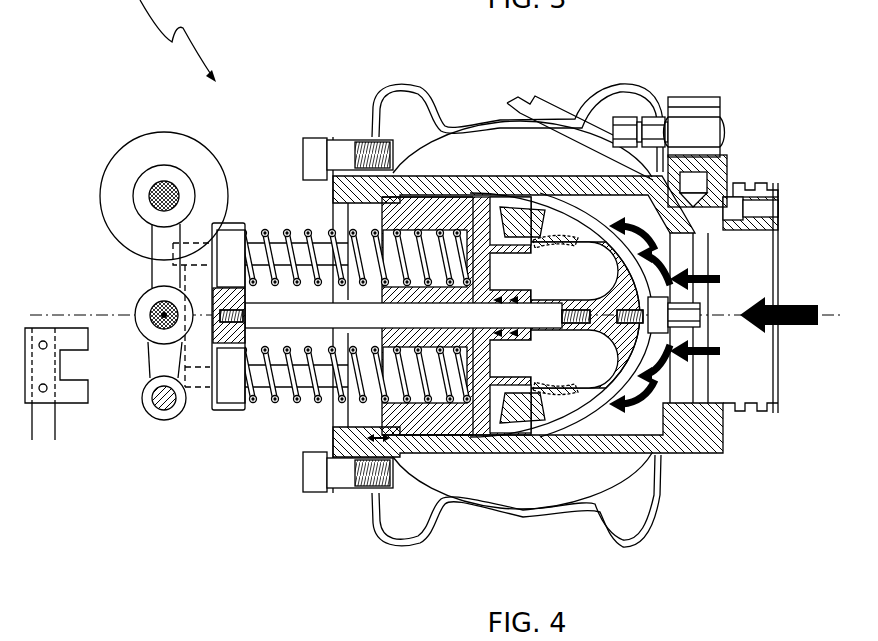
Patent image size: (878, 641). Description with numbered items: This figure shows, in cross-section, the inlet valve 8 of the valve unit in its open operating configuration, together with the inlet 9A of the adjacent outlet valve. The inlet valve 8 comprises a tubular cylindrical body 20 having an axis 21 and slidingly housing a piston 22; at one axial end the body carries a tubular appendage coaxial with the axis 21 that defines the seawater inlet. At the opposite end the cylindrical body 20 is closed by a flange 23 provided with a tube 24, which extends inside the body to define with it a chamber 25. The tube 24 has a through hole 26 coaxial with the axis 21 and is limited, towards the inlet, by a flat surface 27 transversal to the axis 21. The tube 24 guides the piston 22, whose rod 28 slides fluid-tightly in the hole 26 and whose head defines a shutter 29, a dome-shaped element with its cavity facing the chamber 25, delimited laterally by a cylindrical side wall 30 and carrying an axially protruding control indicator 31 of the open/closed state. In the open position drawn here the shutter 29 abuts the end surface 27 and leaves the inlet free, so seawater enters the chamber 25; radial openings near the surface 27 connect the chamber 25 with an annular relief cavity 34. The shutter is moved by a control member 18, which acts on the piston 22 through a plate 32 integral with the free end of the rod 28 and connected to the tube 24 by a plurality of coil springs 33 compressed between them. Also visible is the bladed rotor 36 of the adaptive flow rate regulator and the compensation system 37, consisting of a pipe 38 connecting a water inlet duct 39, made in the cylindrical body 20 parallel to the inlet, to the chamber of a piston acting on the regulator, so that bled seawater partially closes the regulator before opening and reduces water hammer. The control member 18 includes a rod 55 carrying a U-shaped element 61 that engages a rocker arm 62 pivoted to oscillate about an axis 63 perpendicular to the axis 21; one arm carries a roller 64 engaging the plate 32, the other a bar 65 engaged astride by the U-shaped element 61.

The inlet valve 8 is at (446, 470).
The inlet 9A is at (734, 238).
The control member 18 is at (60, 298).
The tubular cylindrical body 20 is at (660, 505).
The axis 21 is at (723, 313).
The piston 22 is at (598, 405).
The flange 23 is at (353, 178).
The tube 24 is at (453, 220).
The chamber 25 is at (606, 202).
The through hole 26 is at (477, 310).
The flat surface 27 is at (567, 352).
The rod 28 is at (318, 325).
The shutter 29 is at (612, 312).
The cylindrical side wall 30 is at (560, 225).
The control indicator 31 is at (692, 322).
The plate 32 is at (210, 392).
The coil springs 33 is at (300, 225).
The annular relief cavity 34 is at (498, 268).
The bladed rotor 36 is at (510, 207).
The compensation system 37 is at (692, 88).
The pipe 38 is at (582, 113).
The water inlet duct 39 is at (711, 208).
The rod 55 is at (45, 430).
The U-shaped element 61 is at (72, 392).
The rocker arm 62 is at (134, 273).
The axis 63 is at (137, 302).
The roller 64 is at (150, 150).
The bar 65 is at (165, 403).